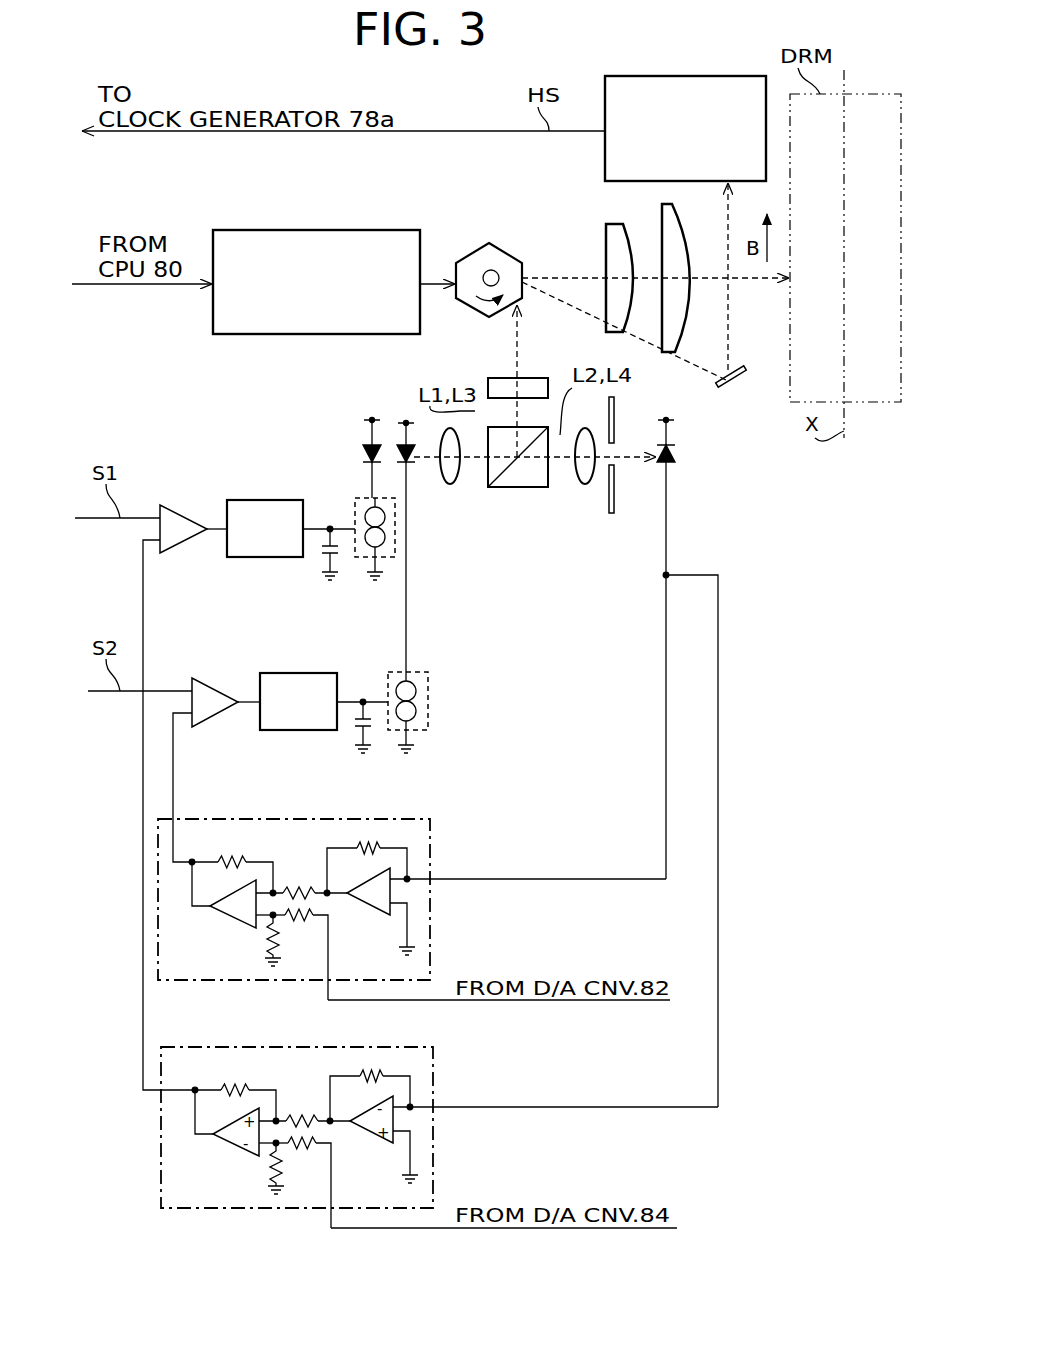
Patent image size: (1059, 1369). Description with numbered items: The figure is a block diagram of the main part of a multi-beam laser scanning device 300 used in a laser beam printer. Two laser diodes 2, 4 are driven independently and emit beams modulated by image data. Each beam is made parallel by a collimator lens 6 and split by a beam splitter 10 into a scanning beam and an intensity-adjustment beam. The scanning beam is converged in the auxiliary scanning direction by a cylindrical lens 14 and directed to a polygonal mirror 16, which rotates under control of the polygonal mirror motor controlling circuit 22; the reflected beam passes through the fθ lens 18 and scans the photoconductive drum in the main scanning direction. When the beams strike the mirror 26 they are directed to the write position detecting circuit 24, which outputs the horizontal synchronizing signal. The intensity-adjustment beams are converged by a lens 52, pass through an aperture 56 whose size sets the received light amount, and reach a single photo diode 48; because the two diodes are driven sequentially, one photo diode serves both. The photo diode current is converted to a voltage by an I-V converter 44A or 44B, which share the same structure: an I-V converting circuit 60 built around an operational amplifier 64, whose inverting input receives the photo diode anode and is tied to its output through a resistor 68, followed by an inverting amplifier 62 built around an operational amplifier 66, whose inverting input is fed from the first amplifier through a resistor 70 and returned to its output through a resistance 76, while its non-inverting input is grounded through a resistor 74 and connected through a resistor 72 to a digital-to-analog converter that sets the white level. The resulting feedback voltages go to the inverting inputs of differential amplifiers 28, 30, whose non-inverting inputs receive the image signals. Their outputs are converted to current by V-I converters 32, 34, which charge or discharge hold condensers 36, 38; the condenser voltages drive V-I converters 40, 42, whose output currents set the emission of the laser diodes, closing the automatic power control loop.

The multi-beam laser scanning device 300 is at (236, 86).
The write position detecting circuit 24 is at (622, 77).
The polygonal mirror motor controlling circuit 22 is at (336, 230).
The polygonal mirror 16 is at (514, 258).
The fθ lens 18 is at (607, 211).
The cylindrical lens 14 is at (548, 378).
The mirror 26 is at (738, 388).
The laser diode 2 is at (366, 456).
The laser diode 4 is at (412, 456).
The collimator lens 6 is at (450, 486).
The beam splitter 10 is at (528, 488).
The lens 52 is at (588, 485).
The aperture 56 is at (616, 505).
The photo diode 48 is at (676, 460).
The differential amplifier 28 is at (184, 514).
The V-I converter 32 is at (292, 476).
The V-I converter 40 is at (355, 509).
The hold condenser 36 is at (318, 556).
The differential amplifier 30 is at (216, 688).
The V-I converter 34 is at (302, 673).
The V-I converter 42 is at (388, 682).
The hold condenser 38 is at (352, 730).
The I-V converter 44A is at (331, 1127).
The I-V converter 44B is at (430, 850).
The I-V converting circuit 60 is at (392, 839).
The inverting amplifier 62 is at (208, 840).
The operational amplifier 64 is at (366, 906).
The operational amplifier 66 is at (226, 914).
The resistor 68 is at (356, 848).
The resistor 70 is at (293, 893).
The resistor 72 is at (311, 921).
The resistor 74 is at (265, 940).
The resistance 76 is at (238, 862).